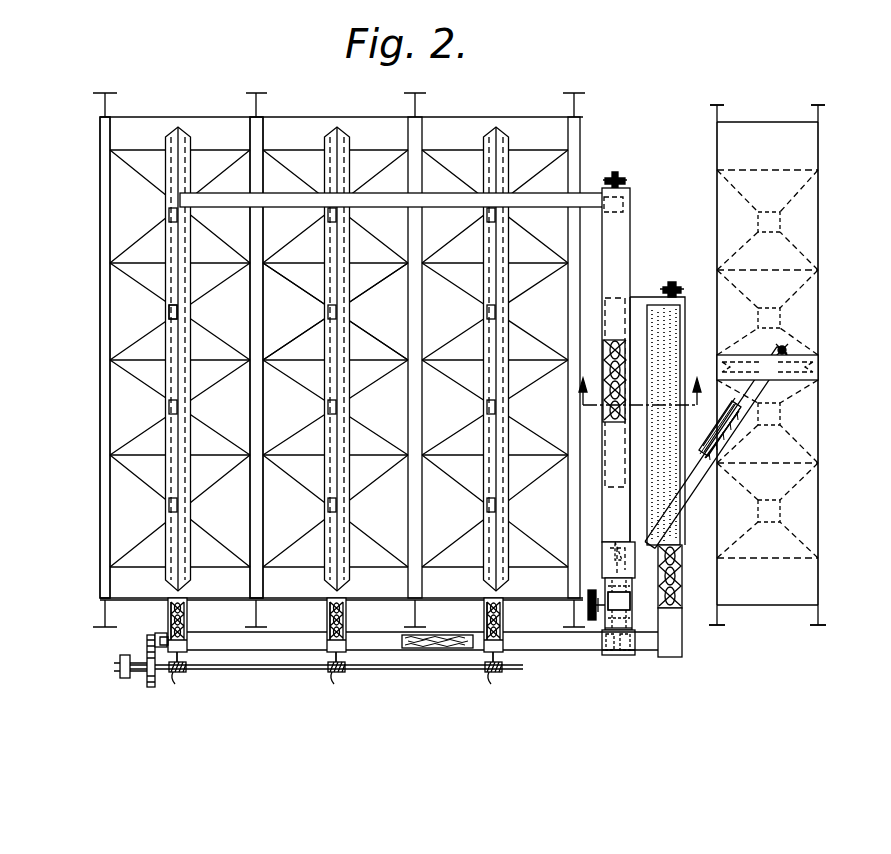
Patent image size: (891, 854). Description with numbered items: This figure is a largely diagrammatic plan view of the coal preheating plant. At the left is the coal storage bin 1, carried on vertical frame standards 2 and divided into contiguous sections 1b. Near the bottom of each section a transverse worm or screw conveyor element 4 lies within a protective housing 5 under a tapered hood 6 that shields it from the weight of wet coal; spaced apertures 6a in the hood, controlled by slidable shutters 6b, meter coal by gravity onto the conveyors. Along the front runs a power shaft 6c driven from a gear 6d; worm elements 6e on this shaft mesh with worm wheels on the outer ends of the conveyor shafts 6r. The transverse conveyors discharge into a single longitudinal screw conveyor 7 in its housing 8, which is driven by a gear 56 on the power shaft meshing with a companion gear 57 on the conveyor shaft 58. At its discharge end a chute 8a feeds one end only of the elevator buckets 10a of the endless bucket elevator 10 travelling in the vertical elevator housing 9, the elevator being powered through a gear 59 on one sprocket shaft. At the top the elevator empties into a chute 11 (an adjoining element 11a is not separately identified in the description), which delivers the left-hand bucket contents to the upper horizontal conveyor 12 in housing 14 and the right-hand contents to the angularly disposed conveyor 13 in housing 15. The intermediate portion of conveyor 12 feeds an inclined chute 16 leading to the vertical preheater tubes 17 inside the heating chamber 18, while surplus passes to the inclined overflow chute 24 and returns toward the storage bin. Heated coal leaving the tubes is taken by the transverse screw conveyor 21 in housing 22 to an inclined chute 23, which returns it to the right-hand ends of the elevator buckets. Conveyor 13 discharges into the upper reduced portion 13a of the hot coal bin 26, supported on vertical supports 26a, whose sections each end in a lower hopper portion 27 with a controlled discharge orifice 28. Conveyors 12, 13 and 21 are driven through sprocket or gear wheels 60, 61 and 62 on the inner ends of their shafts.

The coal storage bin 1 is at (115, 210).
The contiguous sections 1b is at (636, 594).
The vertical frame standards 2 is at (104, 93).
The worm or screw conveyor element 4 is at (190, 610).
The protective housing 5 is at (168, 608).
The tapered hood 6 is at (182, 352).
The spaced apertures 6a is at (165, 310).
The slidable shutters 6b is at (505, 666).
The shaft 6c is at (238, 670).
The gear 6d is at (124, 660).
The worm elements 6e is at (337, 681).
The conveyor shaft 6r is at (188, 660).
The horizontal screw conveyor 7 is at (440, 650).
The protective housing 8 is at (400, 650).
The chute 8a is at (610, 655).
The elevator housing 9 is at (606, 584).
The endless bucket elevator 10 is at (631, 606).
The elevator buckets 10a is at (606, 628).
The chute 11 is at (602, 549).
The block recess 11a is at (620, 548).
The upper horizontally disposed conveyor 12 is at (603, 405).
The second horizontally disposed conveyor 13 is at (727, 435).
The upper reduced portion 13a is at (820, 372).
The protective housing 14 is at (605, 487).
The protective housing 15 is at (703, 468).
The inclined chute 16 is at (640, 438).
The preheater tubes 17 is at (679, 332).
The heating chamber 18 is at (684, 304).
The transverse screw conveyor 21 is at (683, 580).
The protective housing 22 is at (672, 618).
The inclined chute 23 is at (630, 650).
The inclined overflow chute 24 is at (588, 205).
The hot coal bin 26 is at (795, 318).
The vertical supports 26a is at (815, 120).
The lower hopper portion 27 is at (810, 210).
The discharge orifice 28 is at (782, 222).
The gear 56 is at (148, 682).
The companion gear 57 is at (155, 640).
The shaft 58 is at (168, 637).
The gear 59 is at (590, 618).
The sprocket or gear wheel 60 is at (626, 180).
The sprocket or gear wheel 61 is at (786, 350).
The sprocket or gear wheel 62 is at (672, 275).